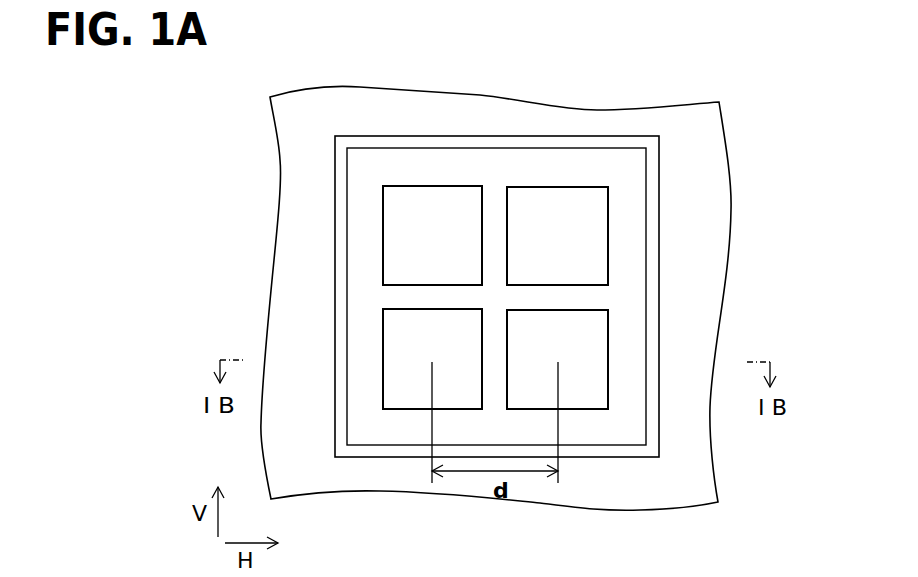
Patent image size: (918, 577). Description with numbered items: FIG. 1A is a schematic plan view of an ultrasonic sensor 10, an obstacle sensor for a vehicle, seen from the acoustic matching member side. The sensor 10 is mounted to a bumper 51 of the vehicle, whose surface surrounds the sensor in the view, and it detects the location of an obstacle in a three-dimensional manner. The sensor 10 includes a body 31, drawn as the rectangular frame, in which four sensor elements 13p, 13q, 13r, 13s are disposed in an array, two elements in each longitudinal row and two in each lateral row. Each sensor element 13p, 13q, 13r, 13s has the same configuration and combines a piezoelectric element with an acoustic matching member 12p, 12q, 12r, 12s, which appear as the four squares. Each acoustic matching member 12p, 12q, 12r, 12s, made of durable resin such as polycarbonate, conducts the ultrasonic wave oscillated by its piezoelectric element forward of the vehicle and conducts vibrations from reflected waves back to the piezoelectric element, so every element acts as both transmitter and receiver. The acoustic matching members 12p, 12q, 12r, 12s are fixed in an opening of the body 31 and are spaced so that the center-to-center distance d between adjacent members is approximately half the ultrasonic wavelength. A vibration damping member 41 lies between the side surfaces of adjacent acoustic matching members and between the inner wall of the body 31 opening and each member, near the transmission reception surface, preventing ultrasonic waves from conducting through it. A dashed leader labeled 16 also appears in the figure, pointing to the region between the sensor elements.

The ultrasonic sensor 10 is at (683, 75).
The bumper 51 is at (623, 120).
The body 31 is at (340, 181).
The vibration damping member 41 is at (630, 437).
The acoustic matching member 12r is at (423, 202).
The acoustic matching member 12s is at (560, 202).
The acoustic matching member 12p is at (408, 397).
The acoustic matching member 12q is at (583, 397).
The sensor element 13r is at (342, 169).
The sensor element 13s is at (653, 169).
The sensor element 13p is at (335, 424).
The sensor element 13q is at (652, 431).
The gap region 16 is at (446, 308).